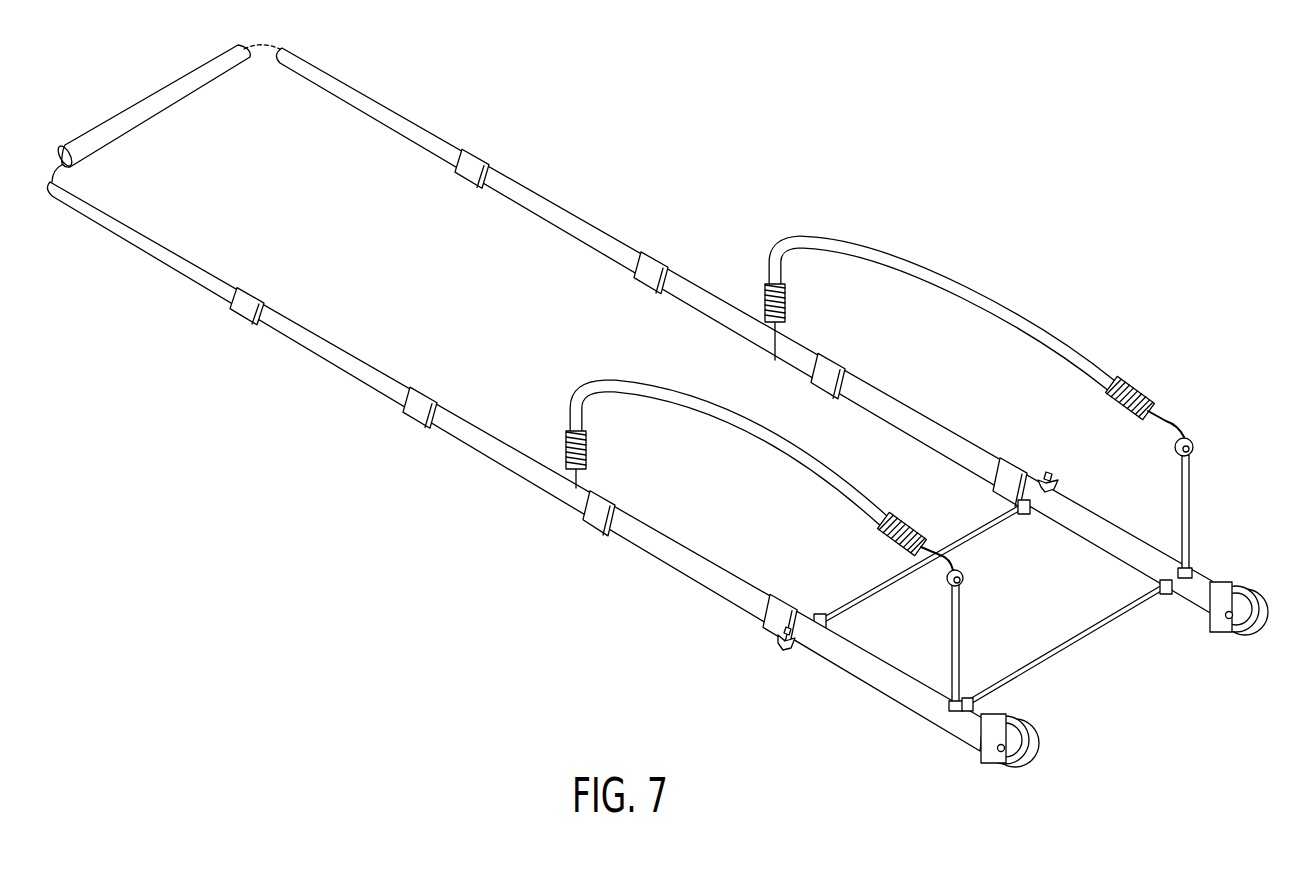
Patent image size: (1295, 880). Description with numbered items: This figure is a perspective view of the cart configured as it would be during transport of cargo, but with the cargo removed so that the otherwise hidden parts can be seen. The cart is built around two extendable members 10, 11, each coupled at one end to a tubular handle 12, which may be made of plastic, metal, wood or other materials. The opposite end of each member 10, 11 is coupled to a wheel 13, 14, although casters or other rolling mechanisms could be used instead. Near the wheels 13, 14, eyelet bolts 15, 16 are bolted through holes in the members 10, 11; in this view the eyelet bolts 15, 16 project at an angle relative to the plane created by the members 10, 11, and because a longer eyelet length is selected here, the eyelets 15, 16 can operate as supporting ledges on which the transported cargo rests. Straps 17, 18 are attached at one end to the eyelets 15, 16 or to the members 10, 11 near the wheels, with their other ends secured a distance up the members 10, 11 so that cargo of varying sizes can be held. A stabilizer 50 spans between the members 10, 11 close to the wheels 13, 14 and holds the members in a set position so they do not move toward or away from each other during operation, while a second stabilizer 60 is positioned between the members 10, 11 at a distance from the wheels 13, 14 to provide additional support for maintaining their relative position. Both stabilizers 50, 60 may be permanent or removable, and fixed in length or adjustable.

The extendable member 10 is at (513, 460).
The extendable member 11 is at (582, 227).
The handle 12 is at (178, 97).
The wheel 13 is at (1010, 767).
The wheel 14 is at (1245, 635).
The eyelet bolt 15 is at (964, 580).
The eyelet bolt 16 is at (1194, 452).
The strap 17 is at (705, 415).
The strap 18 is at (860, 250).
The stabilizer 50 is at (1080, 637).
The stabilizer 60 is at (952, 546).